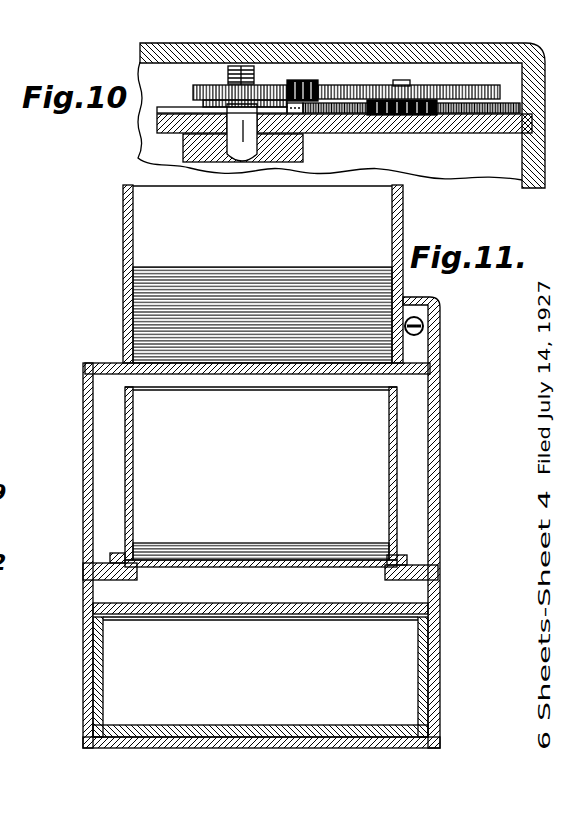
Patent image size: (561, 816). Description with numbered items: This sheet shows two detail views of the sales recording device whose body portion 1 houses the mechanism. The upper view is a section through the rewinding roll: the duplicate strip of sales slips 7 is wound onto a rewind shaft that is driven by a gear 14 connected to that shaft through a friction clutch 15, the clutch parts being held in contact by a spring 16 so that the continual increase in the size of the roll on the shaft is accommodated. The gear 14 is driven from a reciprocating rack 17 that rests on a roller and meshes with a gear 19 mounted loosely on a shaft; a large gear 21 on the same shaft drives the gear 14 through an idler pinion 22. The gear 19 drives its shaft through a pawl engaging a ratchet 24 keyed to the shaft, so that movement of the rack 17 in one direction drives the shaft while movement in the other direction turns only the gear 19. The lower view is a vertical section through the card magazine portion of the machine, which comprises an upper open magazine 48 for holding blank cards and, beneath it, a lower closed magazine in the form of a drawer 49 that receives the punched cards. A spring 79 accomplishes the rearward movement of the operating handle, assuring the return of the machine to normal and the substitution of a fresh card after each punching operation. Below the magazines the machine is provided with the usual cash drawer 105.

In FIG. 10, the body portion 1 is at (512, 45).
In FIG. 11, the body portion 1 is at (83, 688).
In FIG. 10, the roll of sales slips 7 is at (183, 148).
In FIG. 10, the gear 14 is at (207, 85).
In FIG. 10, the friction clutch 15 is at (200, 101).
In FIG. 10, the spring 16 is at (256, 78).
In FIG. 10, the reciprocating rack 17 is at (484, 114).
In FIG. 10, the gear 19 is at (416, 114).
In FIG. 10, the large gear 21 is at (374, 92).
In FIG. 10, the idler pinion 22 is at (318, 88).
In FIG. 10, the ratchet 24 is at (421, 101).
In FIG. 11, the upper open magazine 48 is at (157, 237).
In FIG. 11, the drawer 49 is at (176, 517).
In FIG. 11, the spring 79 is at (410, 335).
In FIG. 11, the cash drawer 105 is at (260, 677).